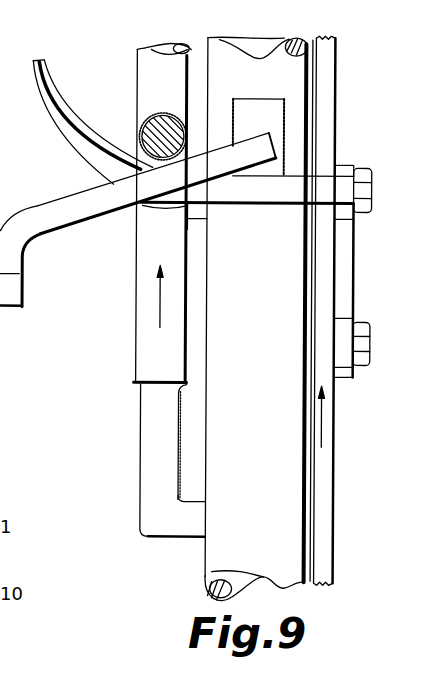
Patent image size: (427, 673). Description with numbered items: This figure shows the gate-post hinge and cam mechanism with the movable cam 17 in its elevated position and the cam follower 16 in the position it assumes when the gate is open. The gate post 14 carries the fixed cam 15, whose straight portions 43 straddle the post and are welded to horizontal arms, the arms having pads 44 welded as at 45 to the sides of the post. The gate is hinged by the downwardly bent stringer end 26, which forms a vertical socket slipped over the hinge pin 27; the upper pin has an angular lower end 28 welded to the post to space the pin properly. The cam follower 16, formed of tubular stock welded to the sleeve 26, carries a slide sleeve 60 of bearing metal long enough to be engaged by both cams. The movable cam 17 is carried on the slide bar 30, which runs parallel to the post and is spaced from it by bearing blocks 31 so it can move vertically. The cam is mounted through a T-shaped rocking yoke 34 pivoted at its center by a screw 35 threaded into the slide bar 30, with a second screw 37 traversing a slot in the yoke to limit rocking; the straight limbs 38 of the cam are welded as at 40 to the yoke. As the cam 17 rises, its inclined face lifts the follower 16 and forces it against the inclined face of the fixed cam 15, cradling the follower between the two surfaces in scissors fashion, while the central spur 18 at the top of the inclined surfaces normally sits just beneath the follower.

The gate post 14 is at (230, 52).
The fixed cam 15 is at (36, 204).
The cam follower 16 is at (144, 110).
The movable cam 17 is at (50, 136).
The central spur 18 is at (40, 65).
The downwardly bent stringer end 26 is at (148, 323).
The hinge pin 27 is at (152, 432).
The angular lower end 28 is at (175, 528).
The slide bar 30 is at (325, 112).
The bearing block 31 is at (313, 75).
The rocking yoke 34 is at (343, 245).
The pivot screw 35 is at (367, 187).
The limit screw 37 is at (363, 342).
The straight limb 38 is at (287, 192).
The weld 40 is at (342, 167).
The straight portion of fixed cam 43 is at (227, 158).
The pad 44 is at (260, 108).
The weld 45 is at (232, 105).
The slide sleeve 60 is at (140, 132).